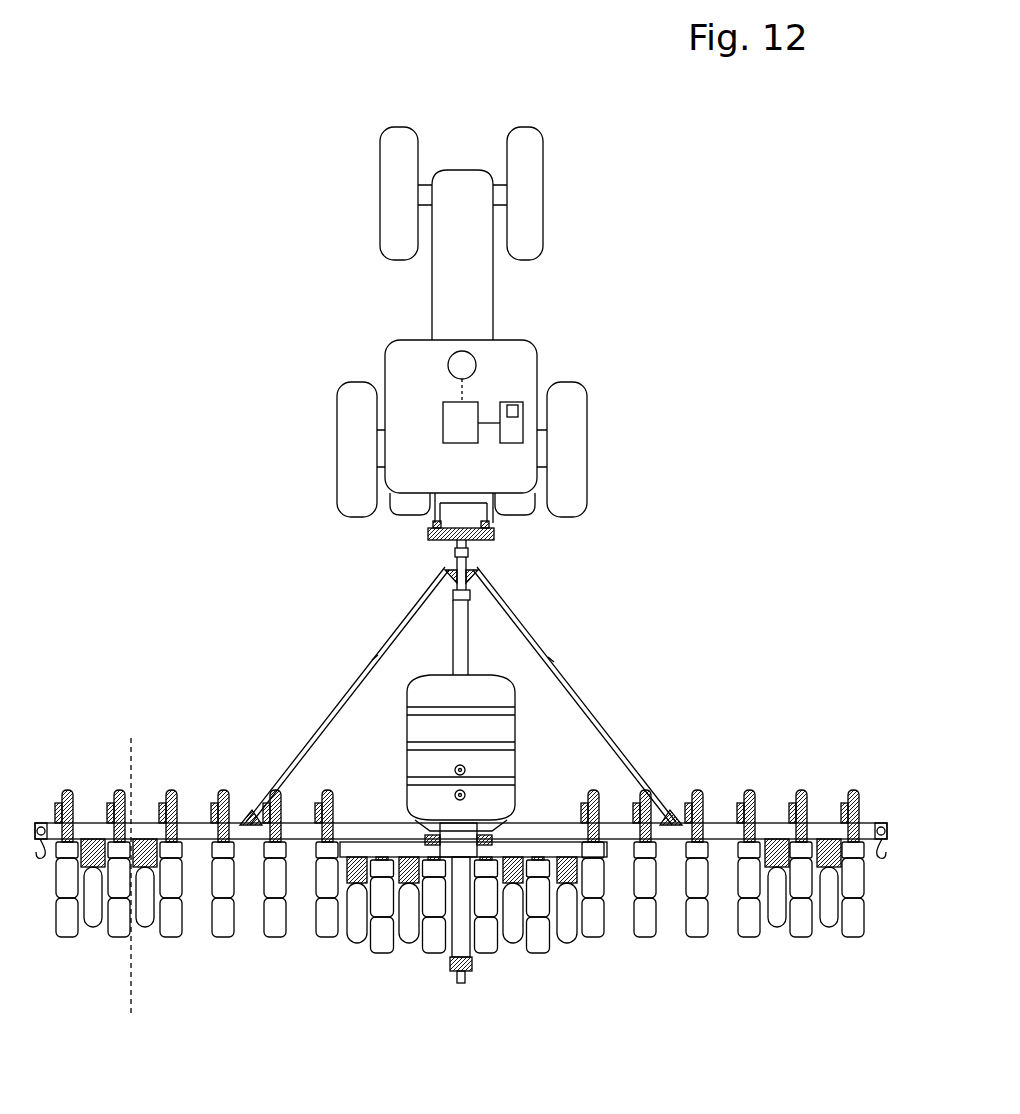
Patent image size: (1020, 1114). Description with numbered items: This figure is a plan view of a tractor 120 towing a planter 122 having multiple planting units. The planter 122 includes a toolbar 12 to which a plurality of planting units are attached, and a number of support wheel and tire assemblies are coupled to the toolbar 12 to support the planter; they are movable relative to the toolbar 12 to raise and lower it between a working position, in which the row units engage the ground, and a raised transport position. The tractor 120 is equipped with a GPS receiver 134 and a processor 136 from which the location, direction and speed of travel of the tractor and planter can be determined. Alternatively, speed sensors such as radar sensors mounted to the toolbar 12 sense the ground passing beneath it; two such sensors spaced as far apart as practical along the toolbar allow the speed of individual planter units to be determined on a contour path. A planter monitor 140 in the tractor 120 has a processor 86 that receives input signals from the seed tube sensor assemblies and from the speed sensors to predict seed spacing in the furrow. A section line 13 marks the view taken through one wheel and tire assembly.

The toolbar 12 is at (195, 823).
The section line 13 is at (131, 738).
The processor 86 is at (512, 402).
The tractor 120 is at (576, 284).
The planter 122 is at (713, 714).
The GPS receiver 134 is at (457, 357).
The processor 136 is at (448, 417).
The planter monitor 140 is at (520, 432).